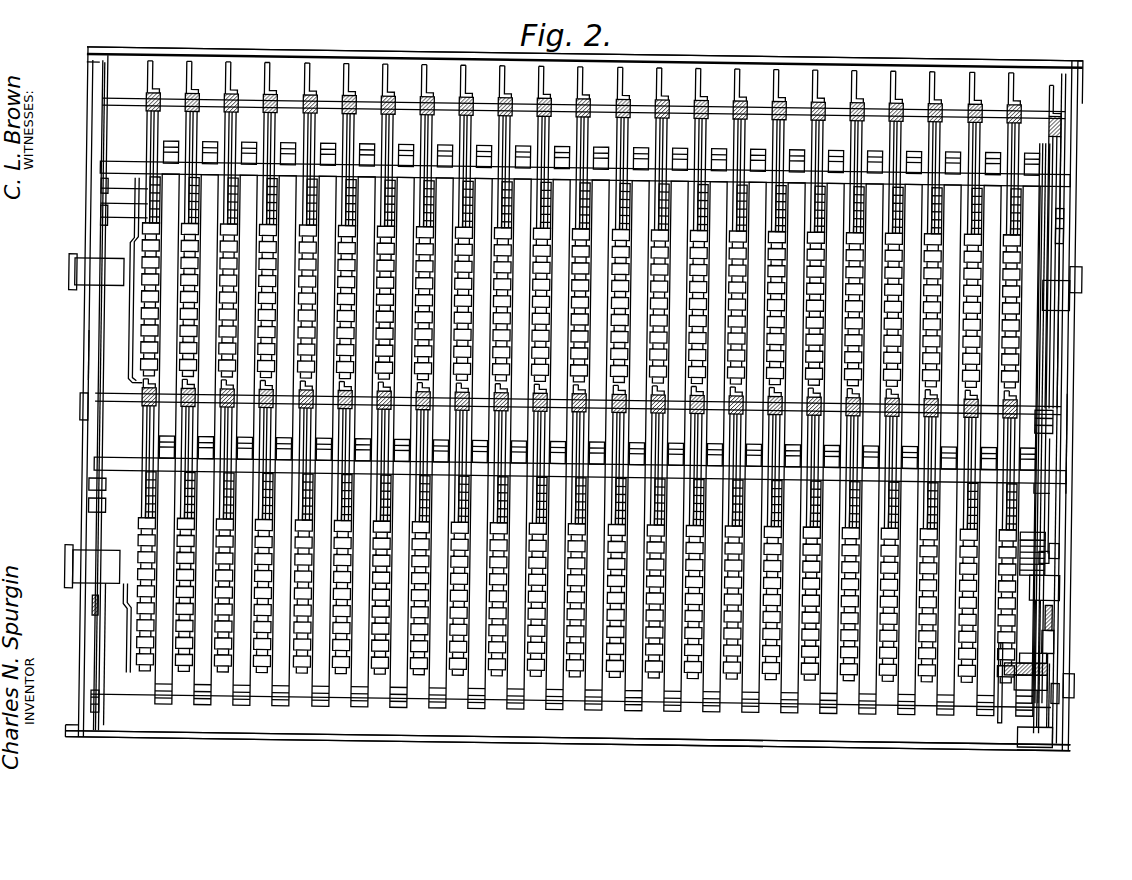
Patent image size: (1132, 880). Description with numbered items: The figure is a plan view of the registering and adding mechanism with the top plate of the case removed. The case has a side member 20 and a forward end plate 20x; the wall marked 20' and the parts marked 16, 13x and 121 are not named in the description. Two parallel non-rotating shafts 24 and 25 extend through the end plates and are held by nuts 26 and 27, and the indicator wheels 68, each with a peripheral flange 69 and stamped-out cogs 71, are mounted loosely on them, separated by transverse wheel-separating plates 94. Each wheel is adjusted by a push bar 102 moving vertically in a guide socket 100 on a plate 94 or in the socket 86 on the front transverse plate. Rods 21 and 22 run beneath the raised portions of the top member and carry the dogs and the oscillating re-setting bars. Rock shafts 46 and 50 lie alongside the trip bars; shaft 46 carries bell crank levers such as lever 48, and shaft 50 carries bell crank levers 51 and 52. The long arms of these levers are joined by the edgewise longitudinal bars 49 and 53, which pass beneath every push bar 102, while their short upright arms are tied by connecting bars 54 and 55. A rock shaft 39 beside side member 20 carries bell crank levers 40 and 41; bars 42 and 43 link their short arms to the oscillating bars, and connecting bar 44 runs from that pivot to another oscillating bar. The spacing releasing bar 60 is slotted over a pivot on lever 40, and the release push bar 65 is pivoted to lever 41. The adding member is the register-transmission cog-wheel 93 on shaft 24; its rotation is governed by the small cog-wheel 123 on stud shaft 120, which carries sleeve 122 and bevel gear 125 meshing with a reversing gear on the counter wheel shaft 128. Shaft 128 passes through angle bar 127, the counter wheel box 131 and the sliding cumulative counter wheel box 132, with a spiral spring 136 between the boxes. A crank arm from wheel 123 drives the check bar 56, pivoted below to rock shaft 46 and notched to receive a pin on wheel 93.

The longitudinal bar 53 is at (122, 101).
The top frame bar 20' is at (585, 42).
The guide socket 100 is at (902, 97).
The push bar 102 is at (977, 94).
The right frame 16 is at (1076, 70).
The socket 86 is at (1061, 112).
The bell crank lever 51 is at (1065, 144).
The rod 22 is at (1036, 170).
The rock shaft 50 is at (108, 218).
The nut 26 is at (1083, 264).
The non-rotating shaft 25 is at (106, 277).
The connecting bar 44 is at (1056, 325).
The connecting bar 54 is at (1054, 342).
The rod 21 is at (1046, 467).
The counter wheel box 132 is at (1077, 491).
The spiral spring 136 is at (1056, 497).
The register-transmission cog-wheel 93 is at (1052, 527).
The block 13x is at (1062, 538).
The counter wheel box 131 is at (1057, 555).
The angle bar 127 is at (1047, 573).
The counter wheel shaft 128 is at (1047, 577).
The non-rotating shaft 24 is at (110, 568).
The spacing releasing bar 60 is at (1055, 614).
The bar 42 is at (1077, 668).
The check bar 56 is at (1062, 676).
The rod 121 is at (1059, 694).
The small cog-wheel 123 is at (1007, 709).
The bevel gear wheel 125 is at (1016, 717).
The sleeve 122 is at (1034, 672).
The stud shaft 120 is at (1046, 720).
The bell crank lever 40 is at (1056, 699).
The side member 20 is at (567, 757).
The indicator wheel 68 is at (761, 703).
The peripheral flange 69 is at (249, 701).
The rock shaft 39 is at (817, 688).
The cogs 71 is at (906, 679).
The bell crank lever 41 is at (106, 717).
The bar 43 is at (103, 133).
The bell crank lever 52 is at (105, 185).
The nut 27 is at (85, 251).
The forward end plate 20x is at (92, 352).
The longitudinal bar 49 is at (145, 391).
The wheel-separating plate 94 is at (145, 429).
The rock shaft 46 is at (109, 483).
The bell crank lever 48 is at (101, 508).
The release push bar 65 is at (101, 610).
The connecting bar 55 is at (112, 662).